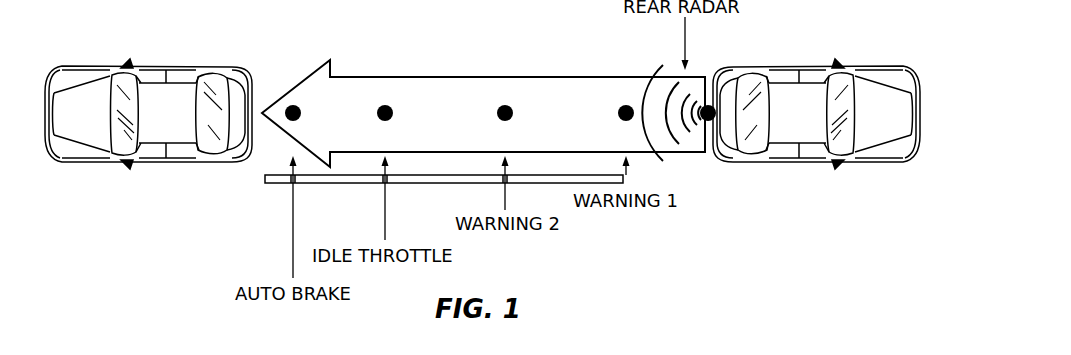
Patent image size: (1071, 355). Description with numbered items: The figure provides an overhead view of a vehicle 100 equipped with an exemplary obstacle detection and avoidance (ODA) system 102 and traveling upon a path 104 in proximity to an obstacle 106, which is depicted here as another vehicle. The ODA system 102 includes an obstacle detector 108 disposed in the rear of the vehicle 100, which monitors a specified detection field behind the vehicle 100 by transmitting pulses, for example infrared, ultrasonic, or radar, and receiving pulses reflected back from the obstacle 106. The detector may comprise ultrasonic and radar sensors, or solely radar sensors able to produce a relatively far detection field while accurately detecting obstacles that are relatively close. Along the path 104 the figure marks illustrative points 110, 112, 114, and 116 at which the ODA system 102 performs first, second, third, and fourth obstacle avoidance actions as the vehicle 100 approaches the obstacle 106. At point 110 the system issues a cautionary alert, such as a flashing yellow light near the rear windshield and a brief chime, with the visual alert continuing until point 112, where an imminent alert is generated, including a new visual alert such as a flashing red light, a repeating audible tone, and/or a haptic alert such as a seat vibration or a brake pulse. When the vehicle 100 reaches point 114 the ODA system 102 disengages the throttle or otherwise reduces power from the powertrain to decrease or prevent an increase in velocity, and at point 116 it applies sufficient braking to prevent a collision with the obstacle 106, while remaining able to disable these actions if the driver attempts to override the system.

The vehicle 100 is at (817, 66).
The obstacle detection and avoidance (ODA) system 102 is at (740, 134).
The path 104 is at (411, 77).
The obstacle 106 is at (150, 67).
The obstacle detector 108 is at (713, 116).
The point 110 is at (626, 104).
The point 112 is at (505, 104).
The point 114 is at (385, 104).
The point 116 is at (292, 104).